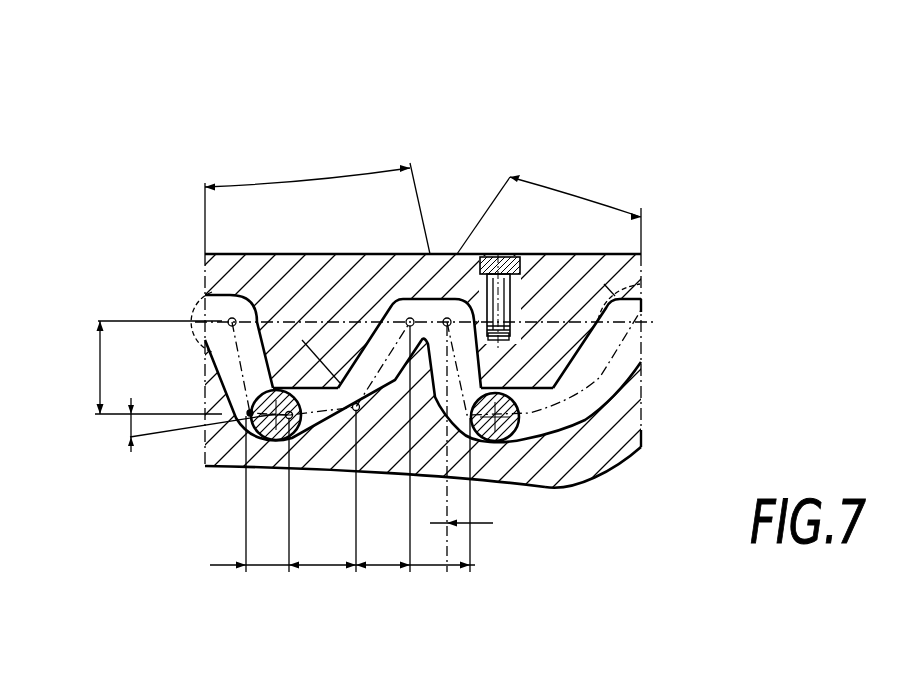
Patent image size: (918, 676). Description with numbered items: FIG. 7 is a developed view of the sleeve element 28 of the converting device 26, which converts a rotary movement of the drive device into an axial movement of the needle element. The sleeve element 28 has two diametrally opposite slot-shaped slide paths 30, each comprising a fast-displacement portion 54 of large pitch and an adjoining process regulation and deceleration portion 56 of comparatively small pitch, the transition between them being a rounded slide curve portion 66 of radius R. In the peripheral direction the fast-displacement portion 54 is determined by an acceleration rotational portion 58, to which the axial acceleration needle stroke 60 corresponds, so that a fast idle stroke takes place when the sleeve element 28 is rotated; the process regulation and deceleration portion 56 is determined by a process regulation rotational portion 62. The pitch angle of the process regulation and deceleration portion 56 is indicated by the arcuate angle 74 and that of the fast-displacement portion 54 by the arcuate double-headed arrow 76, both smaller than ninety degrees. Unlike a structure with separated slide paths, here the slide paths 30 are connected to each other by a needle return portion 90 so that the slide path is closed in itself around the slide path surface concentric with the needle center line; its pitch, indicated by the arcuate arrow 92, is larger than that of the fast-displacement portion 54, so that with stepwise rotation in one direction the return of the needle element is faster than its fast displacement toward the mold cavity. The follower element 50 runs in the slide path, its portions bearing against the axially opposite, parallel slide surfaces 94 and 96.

The converting device 26 is at (497, 121).
The sleeve element 28 is at (630, 418).
The slot-shaped slide path 30 is at (369, 370).
The follower element 50 is at (268, 425).
The fast-displacement portion 54 is at (390, 395).
The process regulation and deceleration portion 56 is at (317, 391).
The acceleration rotational portion 58 is at (382, 567).
The acceleration needle stroke 60 is at (99, 363).
The process regulation rotational portion 62 is at (321, 567).
The rounded slide curve portion 66 is at (623, 455).
The arcuate angle 74 is at (130, 424).
The arcuate double-headed arrow 76 is at (575, 207).
The needle return portion 90 is at (231, 367).
The arcuate arrow 92 is at (307, 181).
The slide surface 94 is at (641, 446).
The slide surface 96 is at (597, 463).